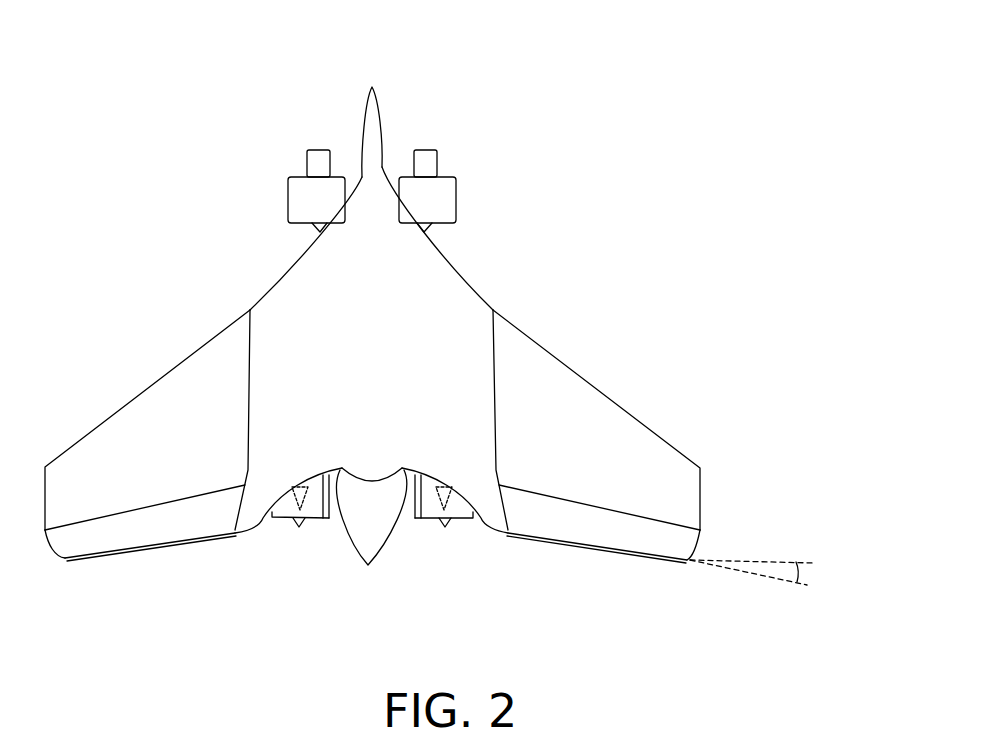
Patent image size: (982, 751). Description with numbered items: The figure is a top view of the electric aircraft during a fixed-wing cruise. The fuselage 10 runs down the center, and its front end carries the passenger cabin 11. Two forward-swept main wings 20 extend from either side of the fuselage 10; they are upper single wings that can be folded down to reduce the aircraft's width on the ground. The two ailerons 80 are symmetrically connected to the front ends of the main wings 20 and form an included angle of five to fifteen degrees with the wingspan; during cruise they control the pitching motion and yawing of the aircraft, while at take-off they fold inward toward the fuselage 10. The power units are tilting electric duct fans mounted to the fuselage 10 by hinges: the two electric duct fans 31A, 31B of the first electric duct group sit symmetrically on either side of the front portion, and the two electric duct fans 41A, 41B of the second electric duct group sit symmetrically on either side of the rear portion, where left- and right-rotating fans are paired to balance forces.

The fuselage 10 is at (376, 143).
The passenger cabin 11 is at (367, 538).
The main wings 20 is at (157, 418).
The ailerons 80 is at (133, 527).
The electric duct fan 41A is at (297, 192).
The electric duct fan 41B is at (449, 192).
The electric duct fan 31A is at (313, 522).
The electric duct fan 31B is at (429, 522).